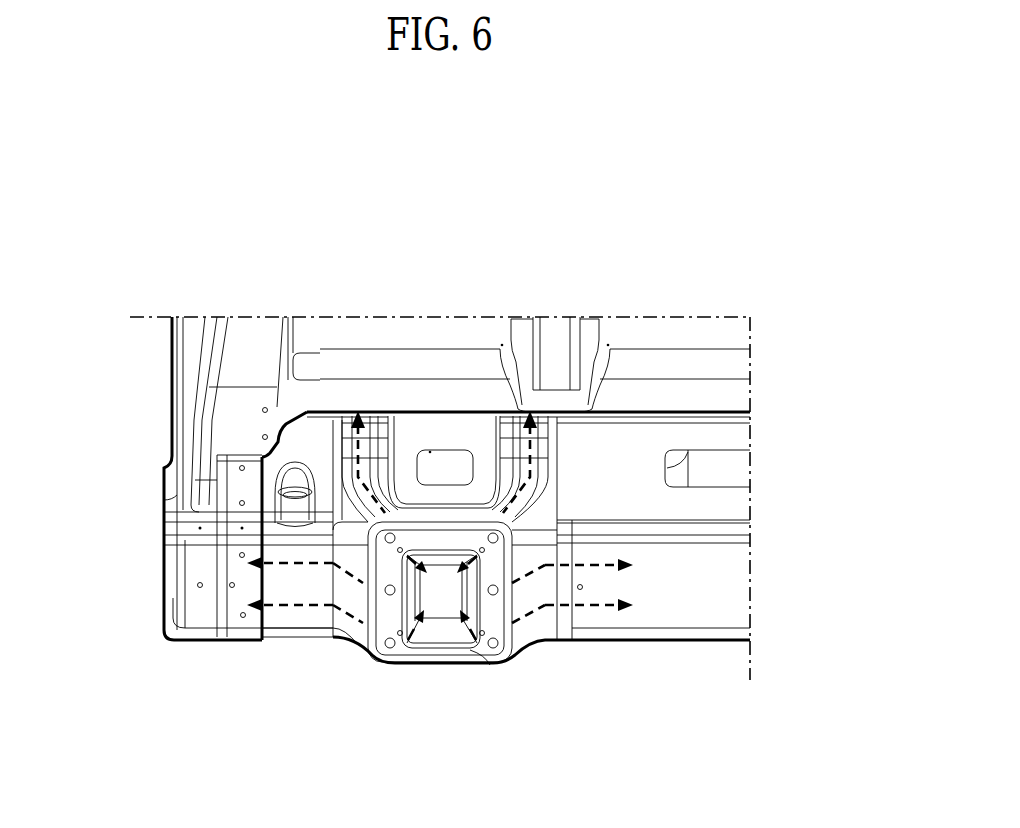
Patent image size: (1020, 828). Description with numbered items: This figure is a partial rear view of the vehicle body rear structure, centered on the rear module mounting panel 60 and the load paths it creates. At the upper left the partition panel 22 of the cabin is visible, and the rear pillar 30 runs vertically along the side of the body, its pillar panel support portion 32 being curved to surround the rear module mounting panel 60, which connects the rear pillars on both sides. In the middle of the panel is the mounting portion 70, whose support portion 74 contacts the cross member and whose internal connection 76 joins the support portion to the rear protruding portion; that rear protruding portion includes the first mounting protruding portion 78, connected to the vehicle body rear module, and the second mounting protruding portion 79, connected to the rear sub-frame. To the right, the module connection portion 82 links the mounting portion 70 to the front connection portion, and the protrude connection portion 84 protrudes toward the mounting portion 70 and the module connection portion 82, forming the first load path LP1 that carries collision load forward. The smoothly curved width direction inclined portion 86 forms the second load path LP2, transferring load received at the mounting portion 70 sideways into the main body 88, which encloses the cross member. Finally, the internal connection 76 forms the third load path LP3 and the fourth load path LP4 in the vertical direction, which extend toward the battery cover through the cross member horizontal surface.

The partition panel 22 is at (351, 388).
The rear pillar 30 is at (143, 535).
The pillar panel support portion 32 is at (200, 638).
The rear module mounting panel 60 is at (647, 660).
The mounting portion 70 is at (440, 682).
The support portion 74 is at (435, 597).
The internal connection 76 is at (420, 592).
The first mounting protruding portion 78 is at (457, 537).
The second mounting protruding portion 79 is at (487, 652).
The module connection portion 82 is at (737, 436).
The protrude connection portion 84 is at (542, 453).
The width direction inclined portion 86 is at (325, 637).
The main body 88 is at (697, 608).
The first load path LP1 is at (547, 412).
The second load path LP2 is at (598, 607).
The third load path LP3 is at (467, 562).
The fourth load path LP4 is at (465, 636).